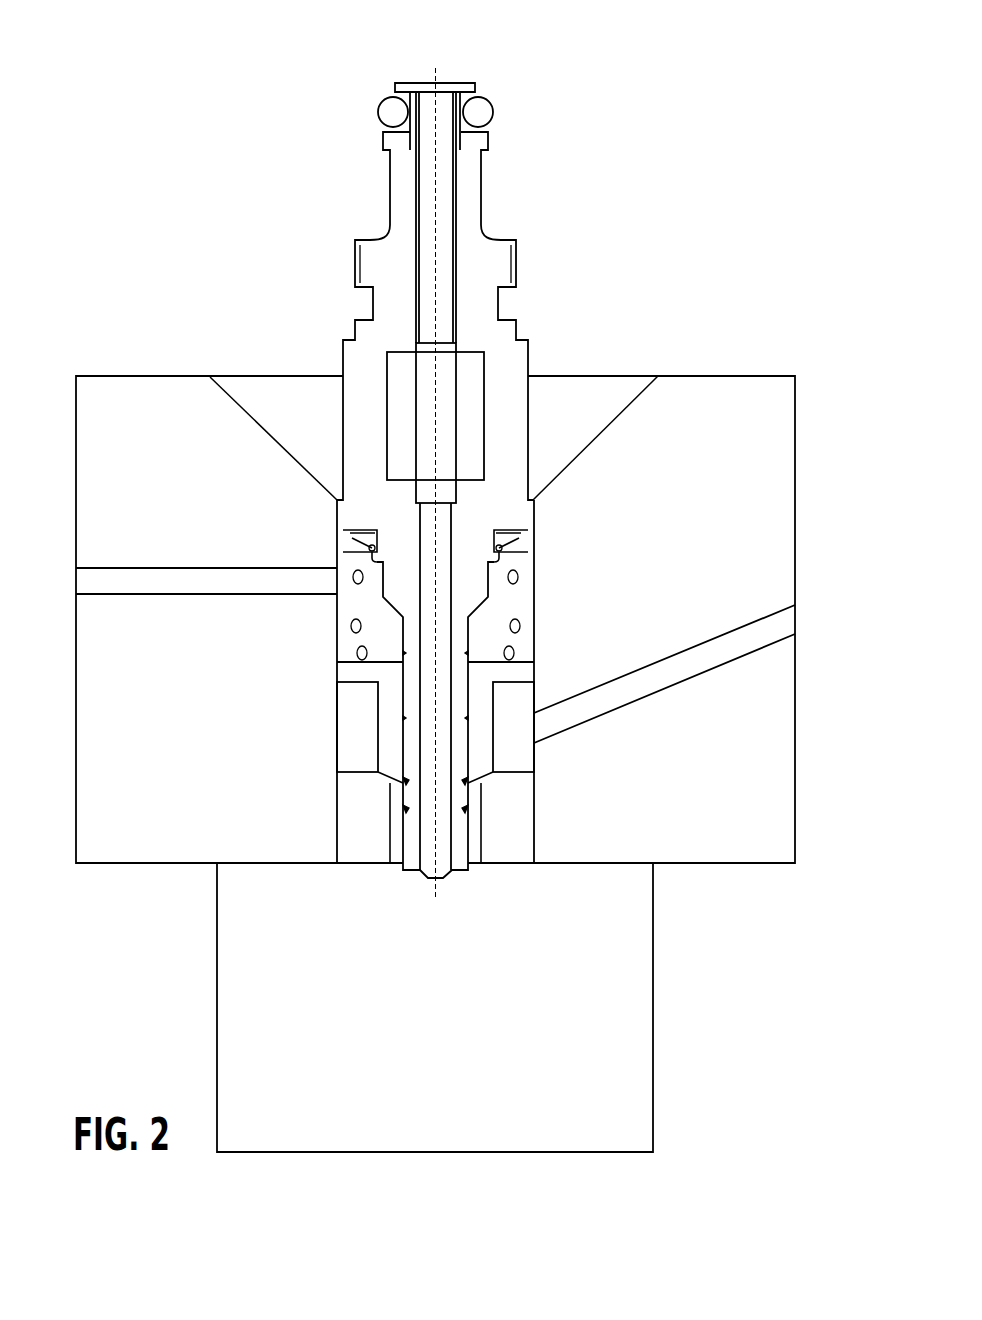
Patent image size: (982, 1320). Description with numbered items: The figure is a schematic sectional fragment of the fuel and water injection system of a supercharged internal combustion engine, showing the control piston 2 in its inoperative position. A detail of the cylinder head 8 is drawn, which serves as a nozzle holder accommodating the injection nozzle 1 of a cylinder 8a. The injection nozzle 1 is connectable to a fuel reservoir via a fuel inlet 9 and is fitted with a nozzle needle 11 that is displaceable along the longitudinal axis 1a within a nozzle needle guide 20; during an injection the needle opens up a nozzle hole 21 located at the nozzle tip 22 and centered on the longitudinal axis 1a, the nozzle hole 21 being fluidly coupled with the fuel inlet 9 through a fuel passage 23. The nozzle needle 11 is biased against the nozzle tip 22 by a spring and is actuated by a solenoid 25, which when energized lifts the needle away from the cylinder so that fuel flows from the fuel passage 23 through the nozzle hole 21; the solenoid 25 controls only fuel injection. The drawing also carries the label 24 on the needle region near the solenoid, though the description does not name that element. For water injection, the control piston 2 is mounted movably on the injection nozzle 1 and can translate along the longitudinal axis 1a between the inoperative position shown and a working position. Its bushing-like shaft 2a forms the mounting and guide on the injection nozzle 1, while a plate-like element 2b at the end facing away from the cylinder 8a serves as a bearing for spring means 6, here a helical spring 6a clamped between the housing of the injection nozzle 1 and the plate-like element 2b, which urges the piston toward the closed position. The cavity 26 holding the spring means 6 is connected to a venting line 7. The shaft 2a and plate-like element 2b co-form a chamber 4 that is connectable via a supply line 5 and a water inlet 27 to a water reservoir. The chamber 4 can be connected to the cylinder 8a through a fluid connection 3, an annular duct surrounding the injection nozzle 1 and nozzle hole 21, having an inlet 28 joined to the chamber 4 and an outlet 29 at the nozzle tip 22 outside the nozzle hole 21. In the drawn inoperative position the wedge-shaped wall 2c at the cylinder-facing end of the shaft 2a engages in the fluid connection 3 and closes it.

The injection nozzle 1 is at (511, 362).
The longitudinal axis 1a is at (432, 82).
The control piston 2 is at (444, 618).
The bushing-like shaft 2a is at (400, 745).
The plate-like element 2b is at (340, 668).
The wedge-shaped wall 2c is at (480, 778).
The fluid connection 3 is at (397, 864).
The chamber 4 is at (365, 746).
The supply line 5 is at (792, 627).
The spring means 6 is at (549, 493).
The helical spring 6a is at (517, 574).
The venting line 7 is at (93, 580).
The cylinder head 8 is at (775, 493).
The cylinder 8a is at (450, 934).
The fuel inlet 9 is at (432, 82).
The nozzle needle 11 is at (445, 622).
The nozzle needle guide 20 is at (350, 530).
The nozzle hole 21 is at (432, 880).
The nozzle tip 22 is at (460, 893).
The fuel passage 23 is at (428, 205).
The armature / piston 24 is at (435, 360).
The solenoid 25 is at (403, 383).
The cavity 26 is at (347, 607).
The water inlet 27 is at (798, 627).
The inlet 28 is at (400, 775).
The outlet 29 is at (398, 866).